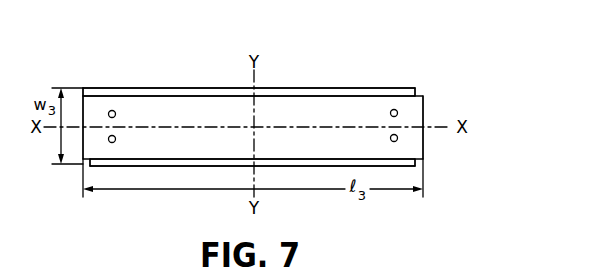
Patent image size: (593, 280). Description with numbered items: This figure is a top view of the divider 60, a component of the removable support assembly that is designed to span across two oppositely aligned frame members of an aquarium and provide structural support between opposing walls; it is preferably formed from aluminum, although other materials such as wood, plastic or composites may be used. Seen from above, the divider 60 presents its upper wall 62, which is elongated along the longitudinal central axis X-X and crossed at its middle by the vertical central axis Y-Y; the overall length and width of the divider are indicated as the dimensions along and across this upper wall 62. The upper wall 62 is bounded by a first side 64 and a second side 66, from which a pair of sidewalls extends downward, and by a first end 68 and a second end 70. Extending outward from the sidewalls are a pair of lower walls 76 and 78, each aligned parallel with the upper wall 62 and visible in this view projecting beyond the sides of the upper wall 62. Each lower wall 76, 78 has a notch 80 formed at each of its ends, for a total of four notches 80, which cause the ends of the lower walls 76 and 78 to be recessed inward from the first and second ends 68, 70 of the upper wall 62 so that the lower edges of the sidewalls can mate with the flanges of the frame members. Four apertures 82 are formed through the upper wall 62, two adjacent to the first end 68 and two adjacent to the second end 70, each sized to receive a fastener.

The divider 60 is at (386, 52).
The upper wall 62 is at (208, 151).
The first side 64 is at (150, 88).
The second side 66 is at (138, 166).
The first end 68 is at (82, 112).
The second end 70 is at (428, 112).
The lower wall 76 is at (193, 88).
The lower wall 78 is at (193, 162).
The notch 80 is at (89, 92).
The aperture 82 is at (117, 136).